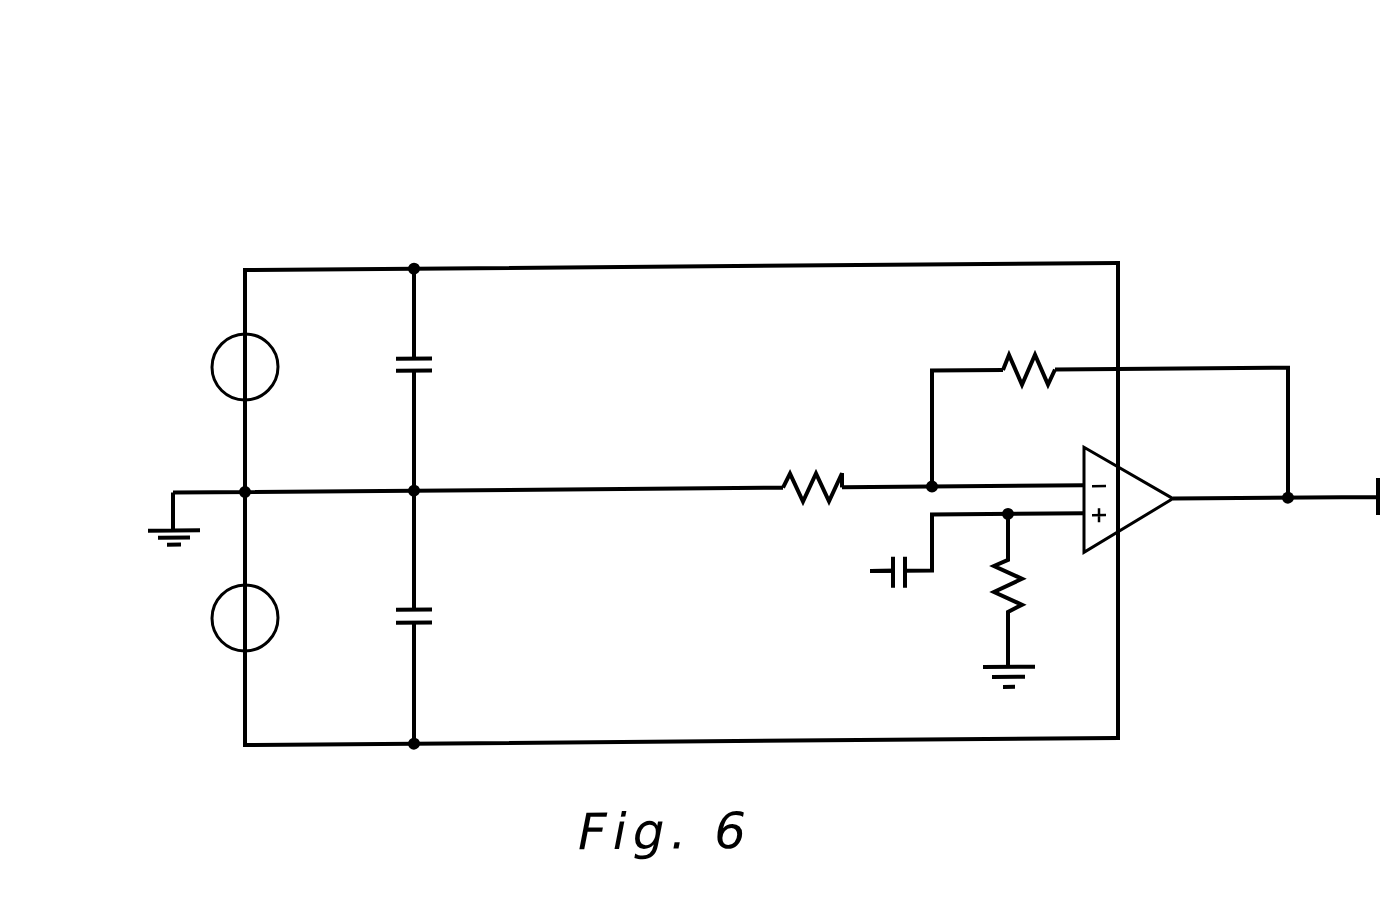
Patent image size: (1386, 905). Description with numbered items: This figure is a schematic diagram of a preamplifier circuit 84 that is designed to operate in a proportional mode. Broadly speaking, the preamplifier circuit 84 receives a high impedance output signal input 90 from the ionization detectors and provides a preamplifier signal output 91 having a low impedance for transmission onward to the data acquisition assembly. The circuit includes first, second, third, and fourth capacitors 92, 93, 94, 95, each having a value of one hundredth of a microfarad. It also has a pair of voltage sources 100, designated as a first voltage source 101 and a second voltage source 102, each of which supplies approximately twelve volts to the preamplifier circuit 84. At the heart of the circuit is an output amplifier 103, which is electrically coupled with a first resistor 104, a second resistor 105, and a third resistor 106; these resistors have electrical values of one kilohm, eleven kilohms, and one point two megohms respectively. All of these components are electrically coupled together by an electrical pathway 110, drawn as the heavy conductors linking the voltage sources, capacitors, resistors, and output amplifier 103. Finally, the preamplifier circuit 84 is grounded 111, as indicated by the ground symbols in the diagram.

The preamplifier circuit 84 is at (880, 147).
The high impedance output signal input 90 is at (880, 580).
The preamplifier signal output 91 is at (1367, 580).
The first capacitor 92 is at (1373, 494).
The second capacitor 93 is at (907, 585).
The third capacitor 94 is at (425, 360).
The fourth capacitor 95 is at (428, 627).
The voltage sources 100 is at (211, 500).
The first voltage source 101 is at (265, 392).
The second voltage source 102 is at (272, 595).
The output amplifier 103 is at (1130, 512).
The first resistor 104 is at (807, 480).
The second resistor 105 is at (1015, 361).
The third resistor 106 is at (1023, 588).
The electrical pathway 110 is at (655, 265).
The ground 111 is at (163, 547).